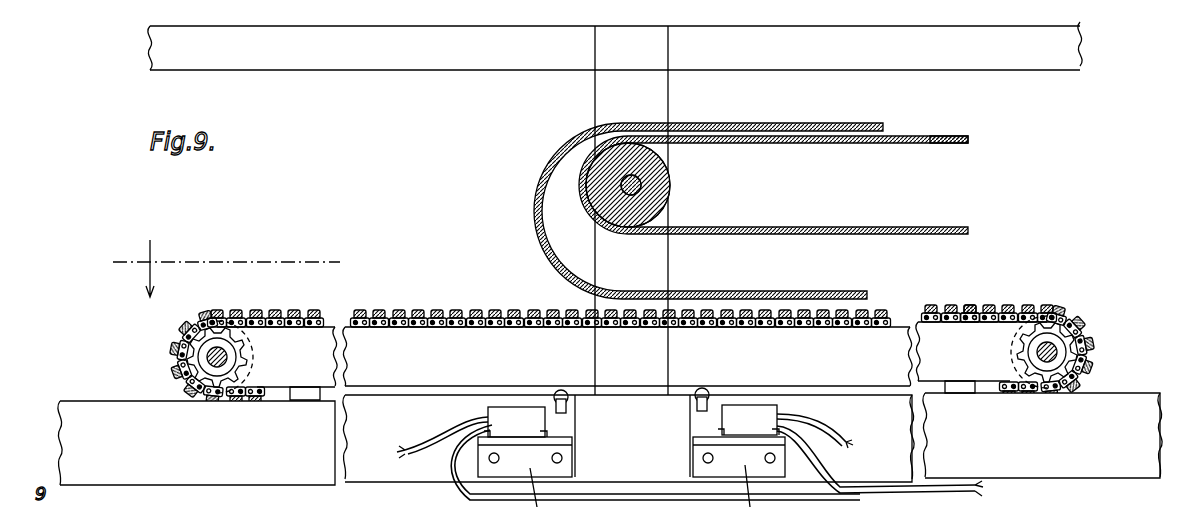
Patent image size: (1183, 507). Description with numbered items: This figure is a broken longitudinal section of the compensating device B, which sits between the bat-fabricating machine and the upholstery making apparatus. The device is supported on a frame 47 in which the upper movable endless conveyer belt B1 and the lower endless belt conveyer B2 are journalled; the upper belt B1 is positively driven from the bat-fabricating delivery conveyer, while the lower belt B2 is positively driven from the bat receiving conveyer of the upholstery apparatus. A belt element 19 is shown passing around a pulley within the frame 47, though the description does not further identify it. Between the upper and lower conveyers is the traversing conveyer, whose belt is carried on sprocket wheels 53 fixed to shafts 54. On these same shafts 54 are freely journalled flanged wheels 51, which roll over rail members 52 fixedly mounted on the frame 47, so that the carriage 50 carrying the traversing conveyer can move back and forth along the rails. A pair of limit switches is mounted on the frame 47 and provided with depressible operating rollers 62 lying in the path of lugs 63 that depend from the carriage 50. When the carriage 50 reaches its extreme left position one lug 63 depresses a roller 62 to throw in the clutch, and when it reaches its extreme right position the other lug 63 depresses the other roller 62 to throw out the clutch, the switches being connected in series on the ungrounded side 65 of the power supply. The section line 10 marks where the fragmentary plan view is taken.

The frame 47 is at (612, 78).
The compensating device B is at (586, 120).
The belt 19 is at (762, 130).
The upper movable conveyer B1 is at (855, 146).
The lower conveyer B2 is at (976, 310).
The section line 10 is at (226, 268).
The carriage 50 is at (402, 345).
The flanged wheels 51 is at (172, 350).
The sprocket wheels 53 is at (248, 367).
The shafts 54 is at (222, 350).
The rail members 52 is at (215, 465).
The lugs 63 is at (302, 393).
The depressible operating rollers 62 is at (563, 392).
The power supply side 65 is at (428, 438).